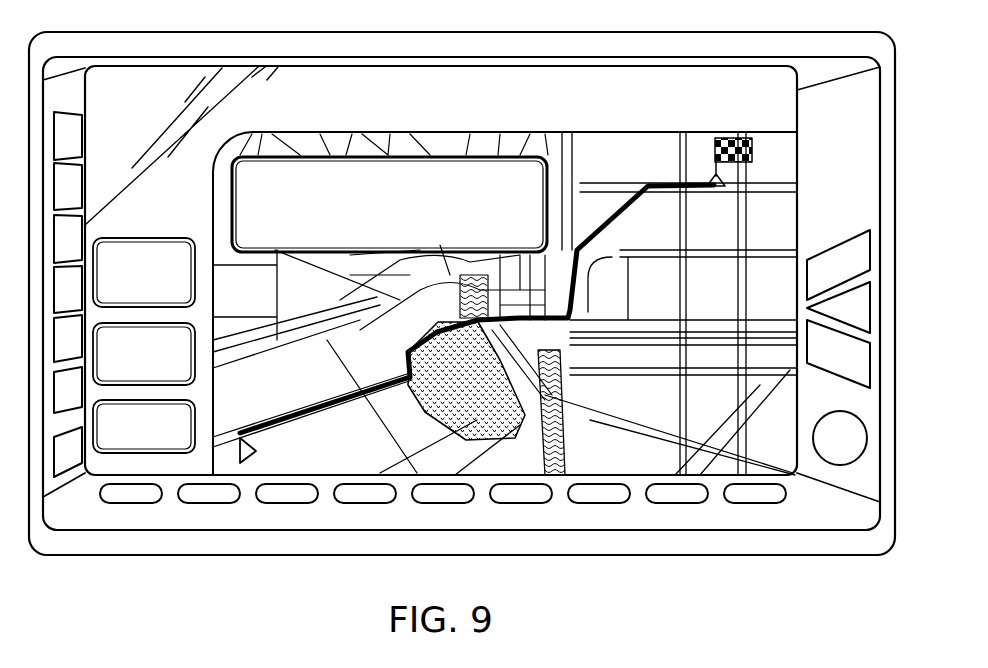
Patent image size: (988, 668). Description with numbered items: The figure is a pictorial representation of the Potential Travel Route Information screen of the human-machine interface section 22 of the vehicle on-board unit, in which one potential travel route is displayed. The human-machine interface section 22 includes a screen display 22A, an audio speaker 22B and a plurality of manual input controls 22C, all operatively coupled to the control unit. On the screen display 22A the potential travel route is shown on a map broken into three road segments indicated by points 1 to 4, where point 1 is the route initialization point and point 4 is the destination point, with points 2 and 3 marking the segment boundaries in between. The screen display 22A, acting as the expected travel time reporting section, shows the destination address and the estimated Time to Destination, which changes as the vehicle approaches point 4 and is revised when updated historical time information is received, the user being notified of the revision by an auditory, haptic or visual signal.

The human-machine interface section 22 is at (298, 555).
The screen display 22A is at (185, 458).
The audio speaker 22B is at (840, 465).
The manual input controls 22C is at (674, 492).
The point 1 is at (244, 397).
The point 2 is at (303, 362).
The point 3 is at (555, 352).
The point 4 is at (672, 212).